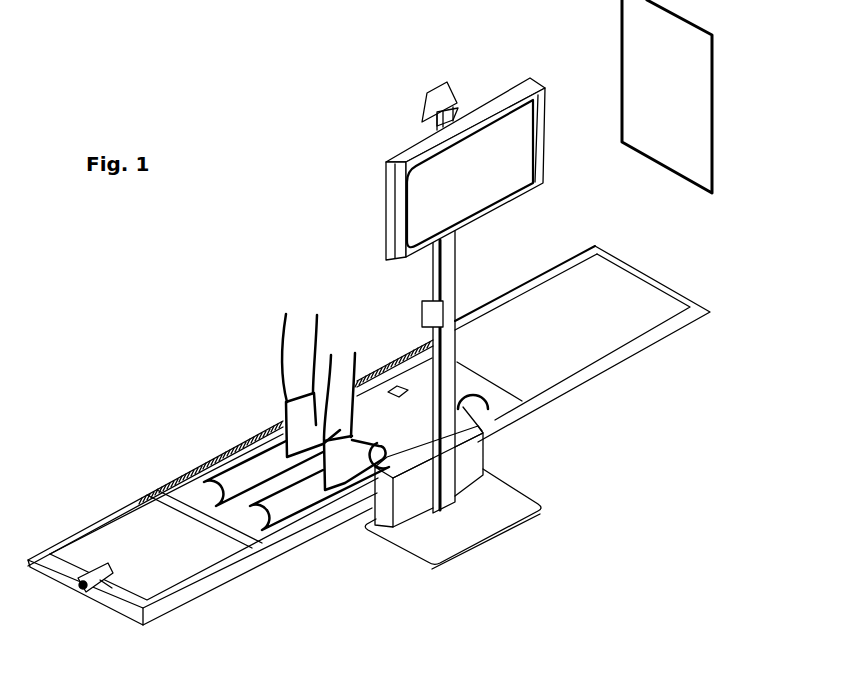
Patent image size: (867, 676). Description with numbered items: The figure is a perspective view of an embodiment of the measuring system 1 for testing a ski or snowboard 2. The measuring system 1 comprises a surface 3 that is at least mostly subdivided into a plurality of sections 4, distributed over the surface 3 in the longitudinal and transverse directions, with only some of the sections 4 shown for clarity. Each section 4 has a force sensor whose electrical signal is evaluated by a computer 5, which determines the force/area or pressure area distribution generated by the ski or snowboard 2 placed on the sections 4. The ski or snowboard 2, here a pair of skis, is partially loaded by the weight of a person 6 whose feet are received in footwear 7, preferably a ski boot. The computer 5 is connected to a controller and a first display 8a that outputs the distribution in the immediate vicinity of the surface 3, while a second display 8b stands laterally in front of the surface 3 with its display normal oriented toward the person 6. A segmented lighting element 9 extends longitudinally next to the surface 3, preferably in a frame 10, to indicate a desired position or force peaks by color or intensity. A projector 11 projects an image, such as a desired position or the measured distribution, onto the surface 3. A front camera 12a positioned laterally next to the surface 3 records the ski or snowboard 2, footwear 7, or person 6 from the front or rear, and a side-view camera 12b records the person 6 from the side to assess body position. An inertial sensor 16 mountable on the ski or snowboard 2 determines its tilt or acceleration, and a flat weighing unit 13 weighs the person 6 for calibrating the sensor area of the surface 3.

The measuring system 1 is at (156, 292).
The ski or snowboard 2 is at (467, 408).
The surface 3 is at (182, 490).
The sections 4 is at (232, 515).
The computer 5 is at (388, 505).
The person 6 is at (297, 332).
The footwear 7 is at (283, 415).
The first display 8a is at (420, 197).
The second display 8b is at (643, 42).
The segmented lighting element 9 is at (140, 502).
The frame 10 is at (227, 573).
The projector 11 is at (427, 97).
The front camera 12a is at (82, 583).
The side-view camera 12b is at (422, 308).
The flat weighing unit 13 is at (563, 342).
The inertial sensor 16 is at (396, 387).